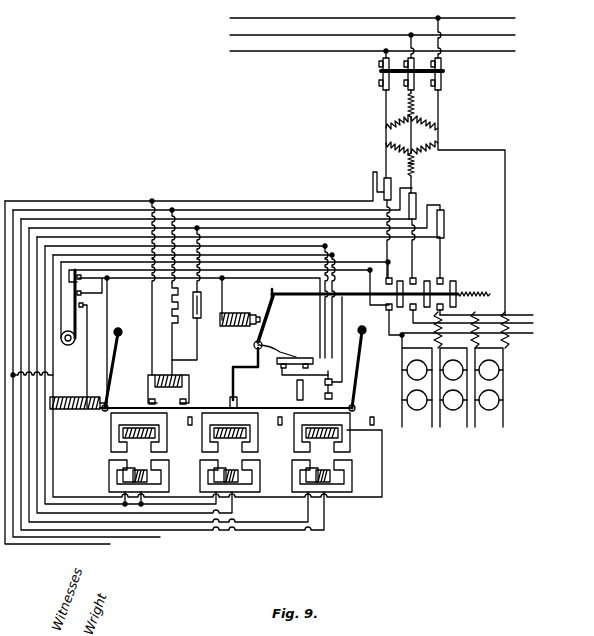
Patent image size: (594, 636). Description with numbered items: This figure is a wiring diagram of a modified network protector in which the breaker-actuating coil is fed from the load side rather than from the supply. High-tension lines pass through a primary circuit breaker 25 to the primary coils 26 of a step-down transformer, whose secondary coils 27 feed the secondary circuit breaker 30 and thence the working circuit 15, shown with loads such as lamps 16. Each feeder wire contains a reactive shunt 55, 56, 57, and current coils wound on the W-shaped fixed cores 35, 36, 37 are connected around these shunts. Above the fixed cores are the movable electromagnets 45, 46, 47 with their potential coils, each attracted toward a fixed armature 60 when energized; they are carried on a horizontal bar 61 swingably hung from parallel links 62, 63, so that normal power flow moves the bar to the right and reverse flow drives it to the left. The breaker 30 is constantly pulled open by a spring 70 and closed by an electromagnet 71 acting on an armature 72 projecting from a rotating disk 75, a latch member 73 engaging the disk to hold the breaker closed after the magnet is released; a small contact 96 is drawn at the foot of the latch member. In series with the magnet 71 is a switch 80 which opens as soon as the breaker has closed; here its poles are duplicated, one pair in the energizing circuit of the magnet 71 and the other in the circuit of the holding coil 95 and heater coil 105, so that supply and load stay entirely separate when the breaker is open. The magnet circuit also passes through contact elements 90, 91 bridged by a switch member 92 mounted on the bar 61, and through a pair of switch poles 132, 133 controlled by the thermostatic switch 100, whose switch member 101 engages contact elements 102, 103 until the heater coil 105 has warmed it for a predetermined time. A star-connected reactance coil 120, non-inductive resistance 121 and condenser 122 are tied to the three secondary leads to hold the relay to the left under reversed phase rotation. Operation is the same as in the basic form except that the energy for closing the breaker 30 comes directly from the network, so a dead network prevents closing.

The working circuit 15 is at (533, 315).
The lamps 16 is at (455, 404).
The primary circuit breaker 25 is at (447, 78).
The primary coils 26 is at (427, 118).
The secondary coils 27 is at (438, 147).
The secondary circuit breaker 30 is at (310, 293).
The fixed electromagnetic core 35 is at (119, 476).
The fixed electromagnetic core 36 is at (234, 492).
The fixed electromagnetic core 37 is at (351, 476).
The movable electromagnet 45 is at (122, 433).
The movable electromagnet 46 is at (215, 433).
The movable electromagnet 47 is at (339, 418).
The reactive shunt 55 is at (444, 222).
The reactive shunt 56 is at (416, 205).
The reactive shunt 57 is at (384, 186).
The fixed armature 60 is at (375, 422).
The horizontal bar 61 is at (190, 408).
The parallel link 62 is at (112, 362).
The parallel link 63 is at (360, 348).
The spring 70 is at (470, 290).
The electromagnet 71 is at (246, 312).
The armature 72 is at (268, 318).
The latch member 73 is at (235, 372).
The rotating disk 75 is at (255, 346).
The switch 80 is at (300, 358).
The contact element 90 is at (325, 382).
The contact element 91 is at (325, 396).
The switch member 92 is at (297, 392).
The holding coil 95 is at (62, 410).
The contact 96 is at (238, 398).
The thermostatic switch 100 is at (73, 322).
The switch member 101 is at (77, 282).
The contact element 102 is at (81, 296).
The contact element 103 is at (86, 310).
The heater coil 105 is at (55, 375).
The reactance coil 120 is at (184, 380).
The non-inductive resistance 121 is at (174, 333).
The condenser 122 is at (199, 322).
The switch pole 132 is at (81, 278).
The switch pole 133 is at (69, 270).